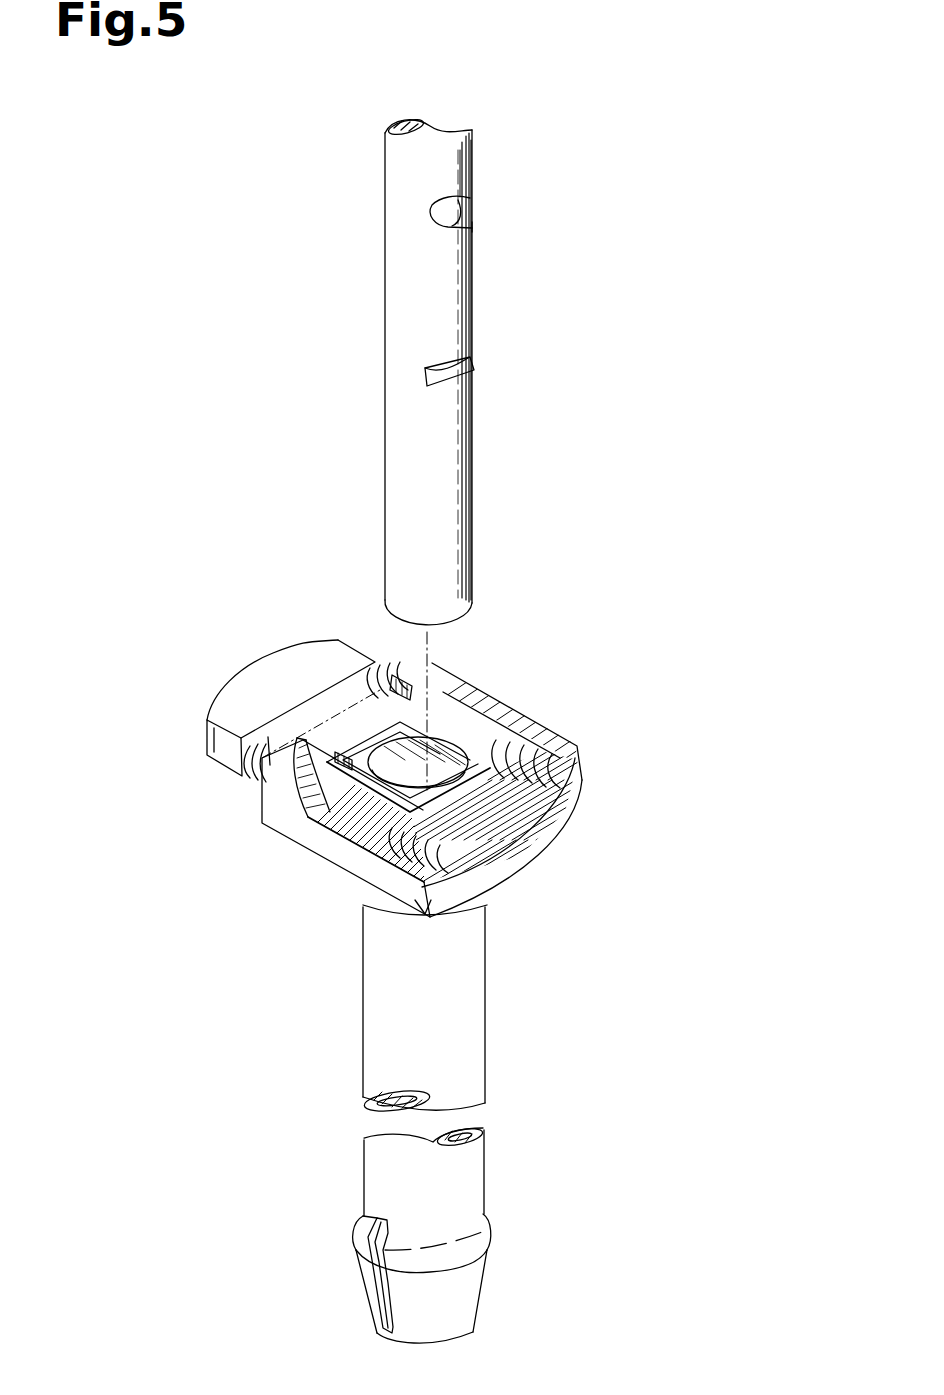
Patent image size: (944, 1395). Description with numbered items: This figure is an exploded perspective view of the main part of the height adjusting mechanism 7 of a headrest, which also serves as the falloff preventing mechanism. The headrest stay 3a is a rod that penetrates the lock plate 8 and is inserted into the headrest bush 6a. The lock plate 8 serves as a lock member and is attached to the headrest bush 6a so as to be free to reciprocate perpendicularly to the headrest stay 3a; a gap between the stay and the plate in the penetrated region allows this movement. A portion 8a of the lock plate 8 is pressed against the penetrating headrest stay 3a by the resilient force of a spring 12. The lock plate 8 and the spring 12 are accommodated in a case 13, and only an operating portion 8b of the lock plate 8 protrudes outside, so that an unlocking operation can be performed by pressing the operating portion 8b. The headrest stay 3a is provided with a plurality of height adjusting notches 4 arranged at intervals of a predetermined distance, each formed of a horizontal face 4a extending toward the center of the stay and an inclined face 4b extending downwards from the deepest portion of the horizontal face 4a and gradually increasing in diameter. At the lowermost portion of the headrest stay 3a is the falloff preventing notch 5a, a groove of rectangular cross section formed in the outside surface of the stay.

The headrest stay 3a is at (395, 284).
The height adjusting notches 4 is at (614, 106).
The horizontal face 4a is at (480, 205).
The inclined face 4b is at (470, 210).
The falloff preventing notch 5a is at (467, 388).
The headrest bush 6a is at (462, 1010).
The height adjusting mechanism 7 is at (500, 676).
The lock plate 8 is at (356, 730).
The portion of the lock plate 8a is at (390, 826).
The operating portion 8b is at (248, 703).
The spring 12 is at (523, 732).
The case 13 is at (535, 852).